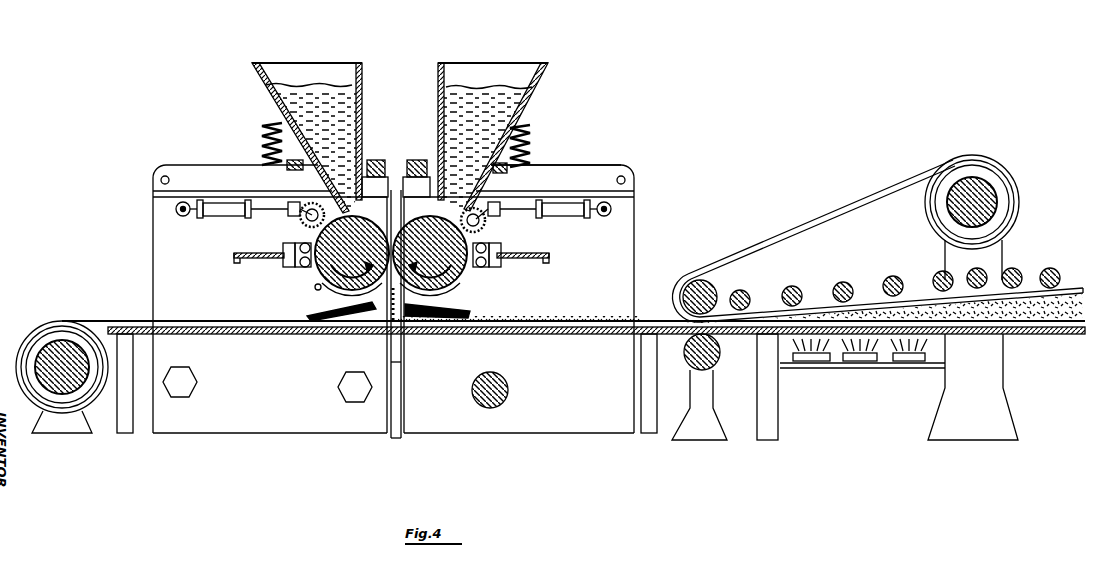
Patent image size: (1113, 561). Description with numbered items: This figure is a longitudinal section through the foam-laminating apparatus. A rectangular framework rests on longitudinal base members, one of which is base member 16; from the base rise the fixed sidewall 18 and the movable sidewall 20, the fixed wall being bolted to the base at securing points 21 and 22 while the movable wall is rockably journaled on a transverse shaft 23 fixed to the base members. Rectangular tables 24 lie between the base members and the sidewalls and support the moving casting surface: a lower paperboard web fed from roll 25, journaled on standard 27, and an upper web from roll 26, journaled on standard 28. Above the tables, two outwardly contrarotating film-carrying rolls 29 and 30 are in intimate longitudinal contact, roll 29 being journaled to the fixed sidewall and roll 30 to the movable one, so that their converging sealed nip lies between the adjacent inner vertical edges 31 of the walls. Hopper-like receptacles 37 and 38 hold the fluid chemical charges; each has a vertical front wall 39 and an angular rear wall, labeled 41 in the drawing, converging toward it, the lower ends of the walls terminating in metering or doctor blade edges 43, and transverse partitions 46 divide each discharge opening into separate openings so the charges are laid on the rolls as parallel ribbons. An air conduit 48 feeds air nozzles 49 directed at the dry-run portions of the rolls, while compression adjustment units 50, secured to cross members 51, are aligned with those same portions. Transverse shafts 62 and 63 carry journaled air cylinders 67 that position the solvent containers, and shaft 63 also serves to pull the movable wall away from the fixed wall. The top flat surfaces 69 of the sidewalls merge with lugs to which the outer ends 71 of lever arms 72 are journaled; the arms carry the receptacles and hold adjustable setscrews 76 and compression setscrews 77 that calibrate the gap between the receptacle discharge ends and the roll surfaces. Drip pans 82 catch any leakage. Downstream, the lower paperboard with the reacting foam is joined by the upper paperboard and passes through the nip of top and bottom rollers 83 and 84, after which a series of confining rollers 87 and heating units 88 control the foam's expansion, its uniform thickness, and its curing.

The base member 16 is at (395, 412).
The fixed sidewall 18 is at (175, 257).
The movable sidewall 20 is at (610, 247).
The securing point 21 is at (183, 388).
The securing point 22 is at (353, 388).
The transverse shaft 23 is at (505, 396).
The rectangular-shaped table 24 is at (1040, 336).
The paperboard roll 25 is at (38, 341).
The paperboard roll 26 is at (1007, 191).
The standard 27 is at (60, 425).
The standard 28 is at (975, 425).
The film-carrying roll 29 is at (318, 268).
The film-carrying roll 30 is at (468, 273).
The inner vertical edge 31 is at (405, 222).
The receptacle 37 is at (312, 78).
The receptacle 38 is at (470, 75).
The vertical front wall 39 is at (438, 88).
The hopper inclined walls 41 is at (262, 78).
The metering or doctor blade edge 43 is at (566, 182).
The transverse partition 46 is at (350, 186).
The air conduit 48 is at (316, 289).
The air nozzle 49 is at (395, 312).
The compression adjustment unit 50 is at (283, 248).
The cross member 51 is at (236, 262).
The transverse shaft 62 is at (176, 209).
The transverse shaft 63 is at (612, 210).
The air cylinder 67 is at (222, 204).
The top flat surface 69 is at (548, 206).
The outer end 71 is at (178, 178).
The lever arm 72 is at (567, 210).
The adjustable setscrew 76 is at (264, 160).
The compression setscrew 77 is at (262, 128).
The drip pan 82 is at (436, 313).
The top roller 83 is at (716, 291).
The bottom roller 84 is at (715, 360).
The confining roller 87 is at (800, 290).
The heating unit 88 is at (861, 361).